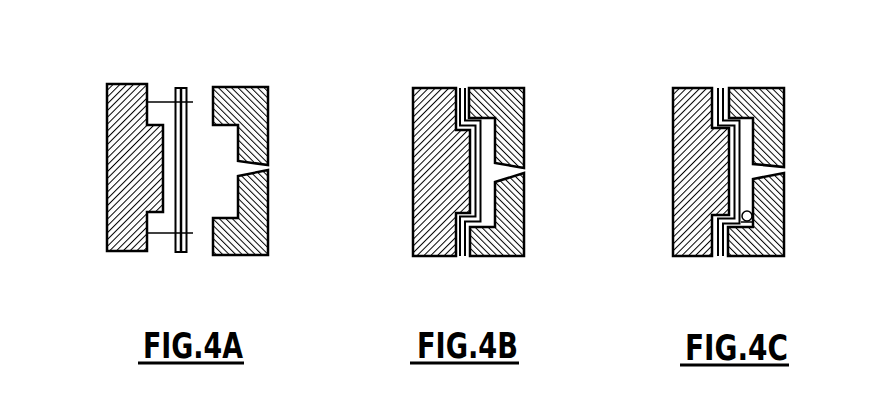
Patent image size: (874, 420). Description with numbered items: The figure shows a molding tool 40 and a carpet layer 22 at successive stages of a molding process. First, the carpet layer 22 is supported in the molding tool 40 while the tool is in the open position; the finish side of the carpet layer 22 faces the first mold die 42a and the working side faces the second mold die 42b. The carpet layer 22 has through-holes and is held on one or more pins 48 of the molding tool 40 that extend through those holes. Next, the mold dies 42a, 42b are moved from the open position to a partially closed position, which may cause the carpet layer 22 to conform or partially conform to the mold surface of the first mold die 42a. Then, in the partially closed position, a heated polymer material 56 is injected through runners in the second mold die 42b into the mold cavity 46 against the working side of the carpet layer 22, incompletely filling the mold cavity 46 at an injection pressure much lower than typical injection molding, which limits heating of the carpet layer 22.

In FIG. 4A, the molding tool 40 is at (185, 189).
In FIG. 4B, the molding tool 40 is at (466, 190).
In FIG. 4C, the molding tool 40 is at (727, 190).
In FIG. 4A, the first mold die 42a is at (107, 153).
In FIG. 4B, the first mold die 42a is at (413, 159).
In FIG. 4C, the first mold die 42a is at (673, 159).
In FIG. 4A, the second mold die 42b is at (268, 128).
In FIG. 4B, the second mold die 42b is at (524, 197).
In FIG. 4C, the second mold die 42b is at (784, 125).
In FIG. 4A, the carpet layer 22 is at (181, 72).
In FIG. 4B, the carpet layer 22 is at (464, 72).
In FIG. 4C, the carpet layer 22 is at (723, 72).
In FIG. 4A, the pins 48 is at (160, 88).
In FIG. 4B, the mold cavity 46 is at (487, 224).
In FIG. 4C, the mold cavity 46 is at (739, 244).
In FIG. 4C, the heated polymer material 56 is at (750, 220).